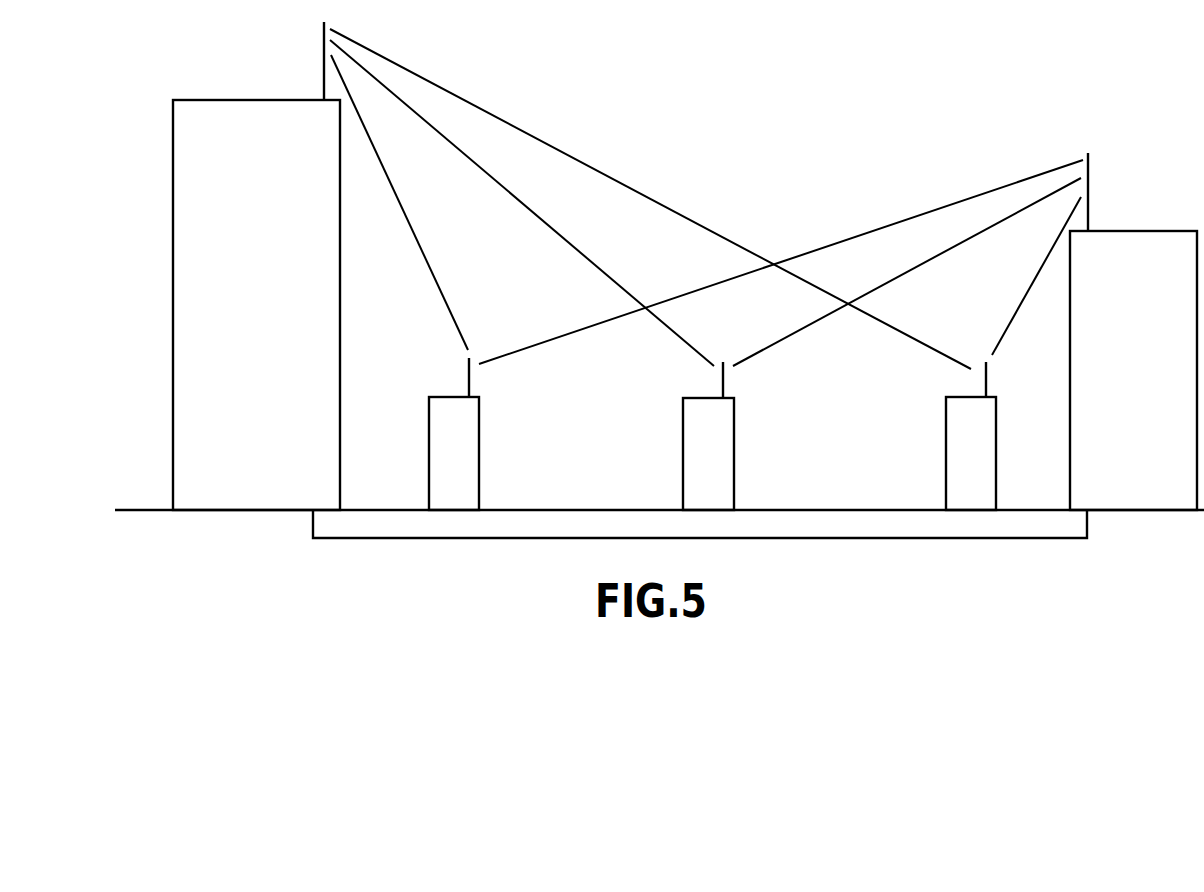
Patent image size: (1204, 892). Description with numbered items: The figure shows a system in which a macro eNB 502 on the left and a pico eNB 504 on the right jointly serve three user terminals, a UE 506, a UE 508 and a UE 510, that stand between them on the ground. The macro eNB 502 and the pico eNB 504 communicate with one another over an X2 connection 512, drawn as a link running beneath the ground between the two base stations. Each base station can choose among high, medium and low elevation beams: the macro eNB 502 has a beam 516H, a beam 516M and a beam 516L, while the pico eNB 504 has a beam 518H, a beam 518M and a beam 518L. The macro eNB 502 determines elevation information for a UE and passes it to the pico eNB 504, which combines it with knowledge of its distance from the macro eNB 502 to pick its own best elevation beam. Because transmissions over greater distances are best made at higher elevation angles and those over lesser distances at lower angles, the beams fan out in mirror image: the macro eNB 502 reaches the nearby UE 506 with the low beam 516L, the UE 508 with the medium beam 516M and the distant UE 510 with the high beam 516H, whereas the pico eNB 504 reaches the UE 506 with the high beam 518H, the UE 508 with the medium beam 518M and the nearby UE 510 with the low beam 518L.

The macro eNB 502 is at (209, 100).
The pico eNB 504 is at (1156, 231).
The UE 506 is at (441, 397).
The UE 508 is at (695, 398).
The UE 510 is at (958, 397).
The X2 connection 512 is at (454, 539).
The high beam of macro eNB 516H is at (637, 190).
The medium beam of macro eNB 516M is at (552, 227).
The low beam of macro eNB 516L is at (435, 280).
The high beam of pico eNB 518H is at (891, 225).
The medium beam of pico eNB 518M is at (884, 283).
The low beam of pico eNB 518L is at (1019, 307).